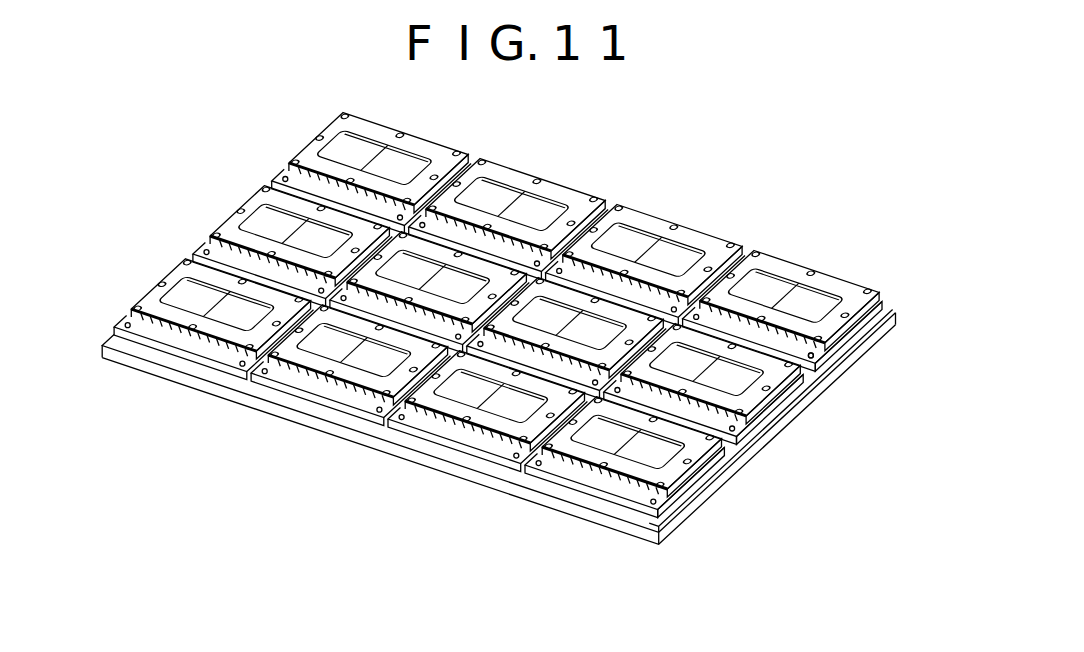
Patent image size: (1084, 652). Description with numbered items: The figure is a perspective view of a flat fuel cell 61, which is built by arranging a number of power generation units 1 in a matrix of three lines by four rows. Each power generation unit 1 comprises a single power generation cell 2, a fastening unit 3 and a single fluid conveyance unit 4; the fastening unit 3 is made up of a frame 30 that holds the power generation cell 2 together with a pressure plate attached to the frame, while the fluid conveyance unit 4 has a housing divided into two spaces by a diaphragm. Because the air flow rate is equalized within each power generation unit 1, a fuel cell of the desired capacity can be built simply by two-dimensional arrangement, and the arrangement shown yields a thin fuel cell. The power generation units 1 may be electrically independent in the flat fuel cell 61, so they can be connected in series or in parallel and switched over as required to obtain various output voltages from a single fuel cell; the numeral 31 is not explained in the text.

The flat fuel cell 61 is at (516, 329).
The power generation unit 1 is at (807, 296).
The power generation cell 2 is at (772, 238).
The fastening unit 3 is at (516, 426).
The frame 30 is at (880, 310).
The rail 31 is at (833, 309).
The fluid conveyance unit 4 is at (813, 359).